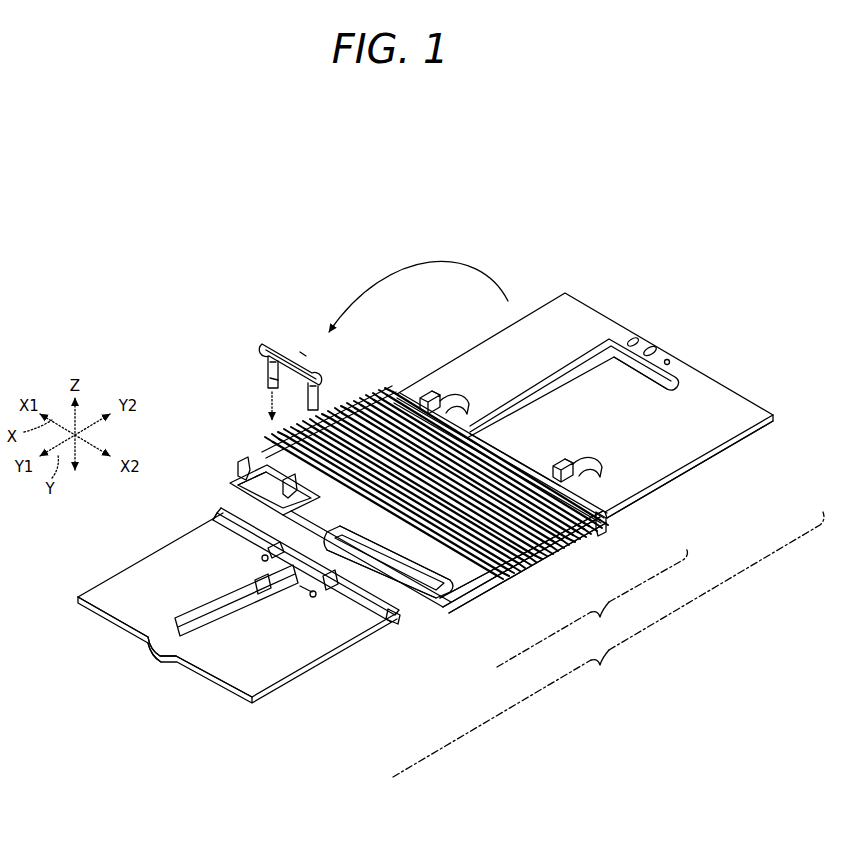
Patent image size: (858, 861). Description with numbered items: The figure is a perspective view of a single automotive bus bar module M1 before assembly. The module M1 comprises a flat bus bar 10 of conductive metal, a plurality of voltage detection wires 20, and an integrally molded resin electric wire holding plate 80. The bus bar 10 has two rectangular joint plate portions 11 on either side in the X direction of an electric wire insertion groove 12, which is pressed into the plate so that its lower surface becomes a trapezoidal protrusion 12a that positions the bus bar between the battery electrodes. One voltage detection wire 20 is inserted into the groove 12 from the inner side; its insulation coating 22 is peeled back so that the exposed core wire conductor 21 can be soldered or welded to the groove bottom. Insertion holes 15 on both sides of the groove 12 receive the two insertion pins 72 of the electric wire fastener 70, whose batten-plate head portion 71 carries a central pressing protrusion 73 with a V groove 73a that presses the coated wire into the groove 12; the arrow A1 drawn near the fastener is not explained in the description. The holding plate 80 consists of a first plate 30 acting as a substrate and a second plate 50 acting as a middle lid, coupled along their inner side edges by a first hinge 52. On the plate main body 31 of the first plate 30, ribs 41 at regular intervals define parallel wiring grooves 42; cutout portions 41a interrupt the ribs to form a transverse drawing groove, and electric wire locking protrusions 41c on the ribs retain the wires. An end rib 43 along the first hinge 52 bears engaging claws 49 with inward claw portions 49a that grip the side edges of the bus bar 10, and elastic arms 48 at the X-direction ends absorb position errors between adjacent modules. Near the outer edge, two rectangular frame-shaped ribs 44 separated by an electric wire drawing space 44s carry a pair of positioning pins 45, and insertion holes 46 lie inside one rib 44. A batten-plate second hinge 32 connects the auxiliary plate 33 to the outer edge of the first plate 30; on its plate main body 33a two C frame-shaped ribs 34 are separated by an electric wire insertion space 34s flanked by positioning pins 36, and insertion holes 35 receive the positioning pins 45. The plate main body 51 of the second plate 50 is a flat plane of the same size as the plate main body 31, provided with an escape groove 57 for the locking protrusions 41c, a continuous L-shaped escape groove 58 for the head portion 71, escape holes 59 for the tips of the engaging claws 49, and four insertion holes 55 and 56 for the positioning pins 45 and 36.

The bus bar 10 is at (301, 686).
The joint plate portion 11 is at (118, 626).
The electric wire insertion groove 12 is at (168, 661).
The protrusion 12a is at (152, 665).
The insertion holes 15 is at (261, 558).
The voltage detection wire 20 is at (264, 598).
The core wire conductor 21 is at (203, 622).
The insulation coating 22 is at (242, 604).
The first plate 30 is at (498, 590).
The plate main body 31 is at (456, 600).
The second hinge 32 is at (404, 596).
The auxiliary plate 33 is at (386, 626).
The plate main body 33a is at (215, 514).
The C frame-shaped rib 34 is at (372, 602).
The electric wire insertion space 34s is at (303, 594).
The insertion holes 35 is at (270, 550).
The positioning pins 36 is at (331, 587).
The rib 41 is at (463, 592).
The cutout portion 41a is at (482, 437).
The electric wire locking protrusion 41c is at (350, 395).
The wiring groove 42 is at (491, 592).
The end rib 43 is at (528, 462).
The rectangular frame-shaped rib 44 is at (263, 468).
The electric wire drawing space 44s is at (252, 494).
The positioning pins 45 is at (281, 486).
The insertion holes 46 is at (388, 620).
The elastic arms 48 is at (240, 464).
The engaging claws 49 is at (440, 396).
The claw portion 49a is at (431, 391).
The second plate 50 is at (662, 504).
The plate main body 51 is at (683, 455).
The first hinge 52 is at (608, 516).
The insertion holes 55 is at (650, 347).
The insertion holes 56 is at (668, 358).
The escape groove 57 is at (539, 388).
The escape groove 58 is at (645, 374).
The escape holes 59 is at (469, 402).
The electric wire fastener 70 is at (275, 343).
The head portion 71 is at (262, 349).
The insertion pins 72 is at (268, 376).
The pressing protrusion 73 is at (296, 355).
The V groove 73a is at (280, 380).
The electric wire holding plate 80 is at (592, 607).
The automotive bus bar module M1 is at (608, 644).
The rotation direction A1 is at (418, 285).